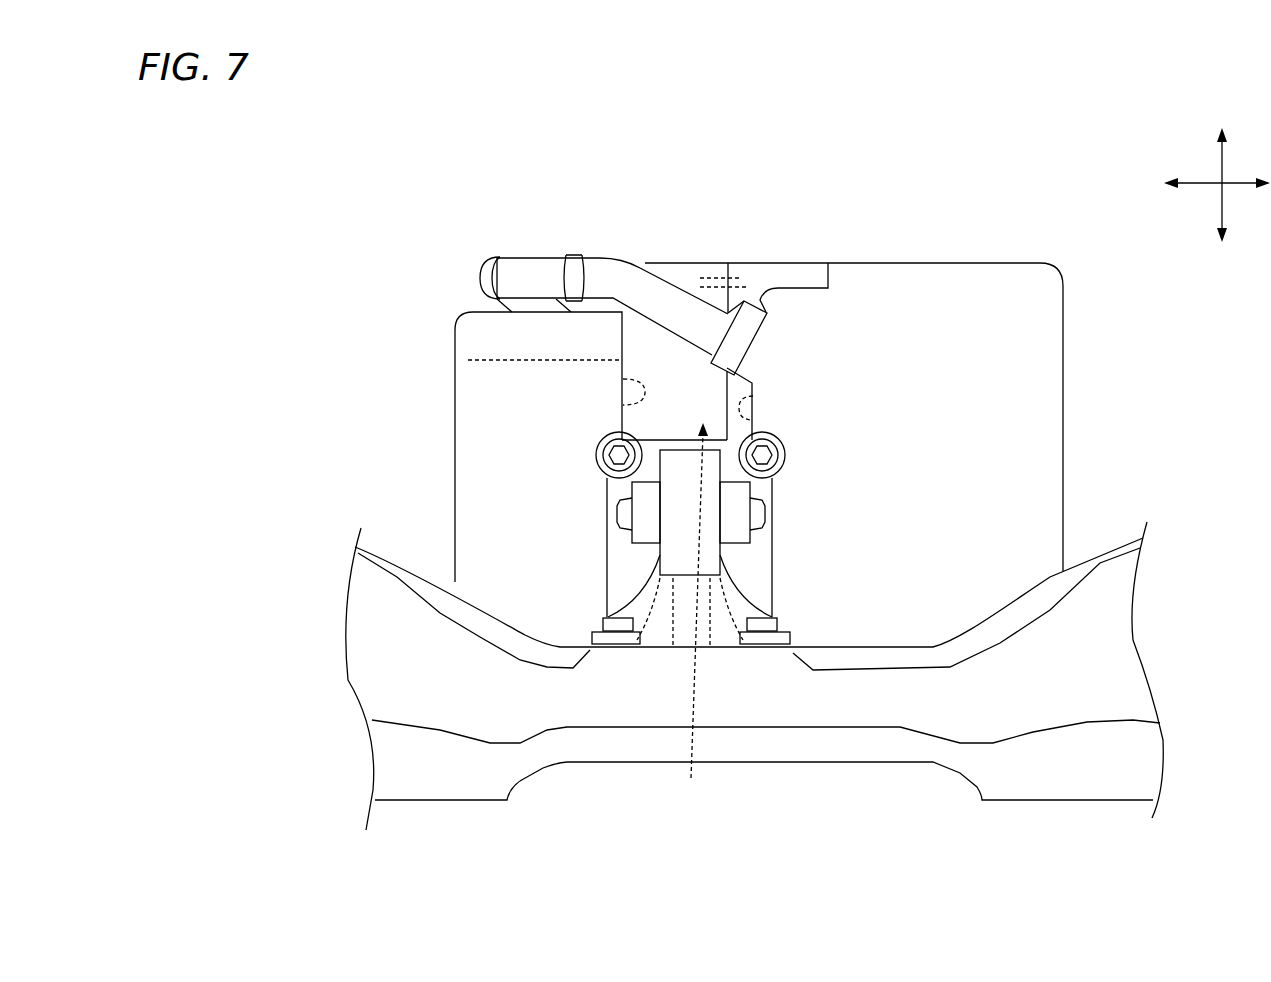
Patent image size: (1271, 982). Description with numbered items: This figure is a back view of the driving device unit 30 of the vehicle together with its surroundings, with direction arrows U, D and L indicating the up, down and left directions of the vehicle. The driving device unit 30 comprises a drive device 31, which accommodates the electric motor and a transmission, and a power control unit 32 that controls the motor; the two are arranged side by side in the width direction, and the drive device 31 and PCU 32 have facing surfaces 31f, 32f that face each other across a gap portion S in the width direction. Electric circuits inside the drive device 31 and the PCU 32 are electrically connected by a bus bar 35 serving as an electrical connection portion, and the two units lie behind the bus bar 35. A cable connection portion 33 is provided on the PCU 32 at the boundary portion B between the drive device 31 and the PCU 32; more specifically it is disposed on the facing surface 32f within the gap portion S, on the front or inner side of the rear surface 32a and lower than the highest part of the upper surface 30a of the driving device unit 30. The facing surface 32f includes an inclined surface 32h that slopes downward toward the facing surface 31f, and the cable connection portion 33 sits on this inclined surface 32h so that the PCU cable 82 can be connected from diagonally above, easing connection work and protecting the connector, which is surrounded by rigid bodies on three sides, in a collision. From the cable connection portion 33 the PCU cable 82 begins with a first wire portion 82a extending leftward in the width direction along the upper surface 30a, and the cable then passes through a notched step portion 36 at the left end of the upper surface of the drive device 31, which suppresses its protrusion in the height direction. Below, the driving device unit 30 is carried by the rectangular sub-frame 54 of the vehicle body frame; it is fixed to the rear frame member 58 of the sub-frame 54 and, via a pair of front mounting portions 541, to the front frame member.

The driving device unit 30 is at (757, 380).
The upper surface of the driving device unit 30a is at (920, 262).
The drive device 31 is at (442, 404).
The facing surface of the drive device 31f is at (612, 410).
The power control unit (PCU) 32 is at (1082, 312).
The rear surface of the PCU 32a is at (970, 290).
The inclined surface 32h is at (776, 300).
The facing surface of the PCU 32f is at (757, 421).
The cable connection portion 33 is at (752, 288).
The bus bar 35 is at (702, 262).
The step portion 36 is at (561, 276).
The PCU cable 82 is at (480, 259).
The first wire portion 82a is at (543, 262).
The front mounting portion 541 is at (683, 518).
The sub-frame 54 is at (779, 676).
The rear frame member 58 is at (1112, 654).
The boundary portion B is at (727, 245).
The gap portion S is at (690, 820).
The up direction U is at (1222, 171).
The down direction D is at (1221, 254).
The left direction L is at (1207, 183).